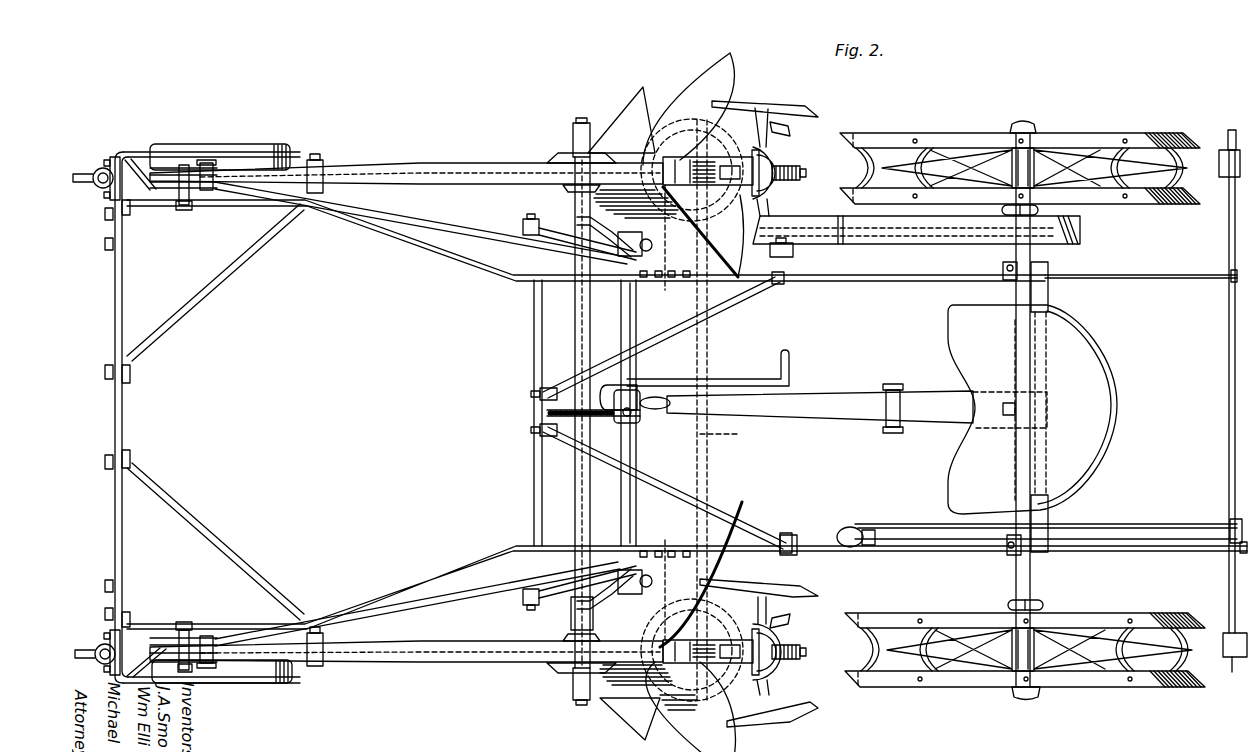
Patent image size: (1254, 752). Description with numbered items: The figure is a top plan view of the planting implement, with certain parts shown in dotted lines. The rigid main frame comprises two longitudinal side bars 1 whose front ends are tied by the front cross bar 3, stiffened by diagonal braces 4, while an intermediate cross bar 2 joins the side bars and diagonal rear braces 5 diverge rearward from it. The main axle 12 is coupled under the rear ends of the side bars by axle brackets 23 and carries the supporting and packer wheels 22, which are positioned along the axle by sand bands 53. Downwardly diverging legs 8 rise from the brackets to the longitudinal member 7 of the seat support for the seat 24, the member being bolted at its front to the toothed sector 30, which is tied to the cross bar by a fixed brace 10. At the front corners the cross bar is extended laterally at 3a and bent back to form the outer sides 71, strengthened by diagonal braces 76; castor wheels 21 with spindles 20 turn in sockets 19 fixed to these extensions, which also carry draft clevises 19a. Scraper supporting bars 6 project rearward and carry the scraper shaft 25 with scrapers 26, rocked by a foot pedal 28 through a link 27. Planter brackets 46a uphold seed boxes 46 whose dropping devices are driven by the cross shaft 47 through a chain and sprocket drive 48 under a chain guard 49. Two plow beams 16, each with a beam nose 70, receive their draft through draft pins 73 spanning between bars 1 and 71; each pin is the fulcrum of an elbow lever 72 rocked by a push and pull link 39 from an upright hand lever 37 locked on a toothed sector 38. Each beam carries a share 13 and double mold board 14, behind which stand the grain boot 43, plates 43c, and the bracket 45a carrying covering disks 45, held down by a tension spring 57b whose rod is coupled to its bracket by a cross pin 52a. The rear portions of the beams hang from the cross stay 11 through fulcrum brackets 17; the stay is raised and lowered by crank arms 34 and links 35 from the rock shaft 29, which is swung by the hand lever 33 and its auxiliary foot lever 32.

The side bars 1 is at (246, 203).
The intermediate cross bar 2 is at (533, 486).
The front cross bar 3 is at (123, 420).
The laterally extended ends of front cross bar 3a is at (130, 208).
The diagonal braces 4 is at (220, 277).
The diagonal rear braces 5 is at (690, 318).
The scraper supporting bars 6 is at (1130, 278).
The longitudinal member of seat support 7 is at (850, 424).
The legs of seat support 8 is at (1050, 304).
The fixed brace 10 is at (540, 430).
The cross shaft or stay bar 11 is at (575, 331).
The main axle 12 is at (1032, 583).
The point or share 13 is at (548, 160).
The double mold board 14 is at (632, 100).
The plow beams 16 is at (400, 165).
The bearing or fulcrum brackets 17 is at (577, 222).
The sockets 19 is at (108, 190).
The front draft clevises 19a is at (90, 174).
The vertical spindles 20 is at (103, 168).
The front corner castor wheels 21 is at (256, 147).
The supporting and packer wheels 22 is at (900, 134).
The axle brackets 23 is at (1003, 273).
The seat 24 is at (950, 478).
The transverse scraper shaft 25 is at (1229, 386).
The scrapers 26 is at (1222, 148).
The link connection 27 is at (918, 524).
The foot pedal 28 is at (845, 528).
The rock shaft 29 is at (623, 505).
The fixed toothed sector casting 30 is at (625, 420).
The auxiliary foot lever 32 is at (770, 378).
The hand lever 33 is at (672, 380).
The lift or crank arms 34 is at (585, 228).
The push and pull links 35 is at (523, 226).
The upright hand levers 37 is at (645, 278).
The fixed toothed sectors 38 is at (672, 278).
The push and pull link 39 is at (402, 216).
The vertical grain boot 43 is at (746, 140).
The plates 43c is at (770, 207).
The rotary covering disks 45 is at (806, 107).
The covering disk bracket 45a is at (789, 131).
The seed boxes 46 is at (708, 137).
The planter supporting brackets 46a is at (593, 628).
The rotary cross shaft 47 is at (730, 436).
The chain and sprocket drive 48 is at (865, 246).
The chain guard 49 is at (841, 214).
The removable cross pin or bolt 52a is at (768, 612).
The sand bands 53 is at (1045, 209).
The coiled tension spring 57b is at (788, 166).
The beam nose or extension 70 is at (312, 158).
The rearwardly extending end of front cross bar 71 is at (165, 152).
The elbow or bell crank lever 72 is at (207, 192).
The transverse draft pin 73 is at (183, 211).
The diagonal braces 76 is at (137, 160).